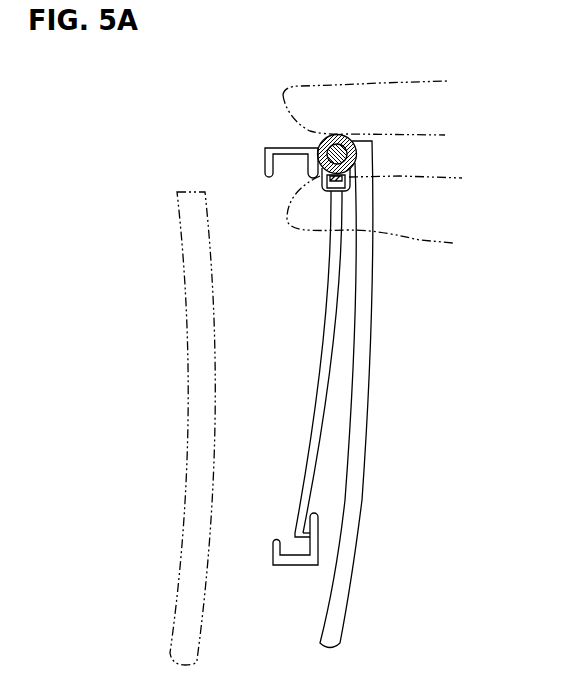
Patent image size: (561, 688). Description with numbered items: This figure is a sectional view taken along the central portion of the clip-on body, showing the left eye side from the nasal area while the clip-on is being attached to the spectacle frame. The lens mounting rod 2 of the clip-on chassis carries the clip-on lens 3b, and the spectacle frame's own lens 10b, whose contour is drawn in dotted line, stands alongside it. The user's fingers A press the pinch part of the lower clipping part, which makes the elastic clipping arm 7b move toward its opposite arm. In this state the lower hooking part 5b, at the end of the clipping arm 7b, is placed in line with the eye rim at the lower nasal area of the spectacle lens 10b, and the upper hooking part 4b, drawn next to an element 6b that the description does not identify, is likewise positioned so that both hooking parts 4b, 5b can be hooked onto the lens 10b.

The lens mounting rod 2 is at (319, 148).
The lens 3b is at (363, 402).
The upper hooking part 4b is at (263, 165).
The lower hooking part 5b is at (300, 567).
The engaging bracket 6b is at (308, 178).
The clipping arm 7b is at (320, 342).
The lens of the spectacle frame 10b is at (200, 370).
The fingers A is at (432, 202).